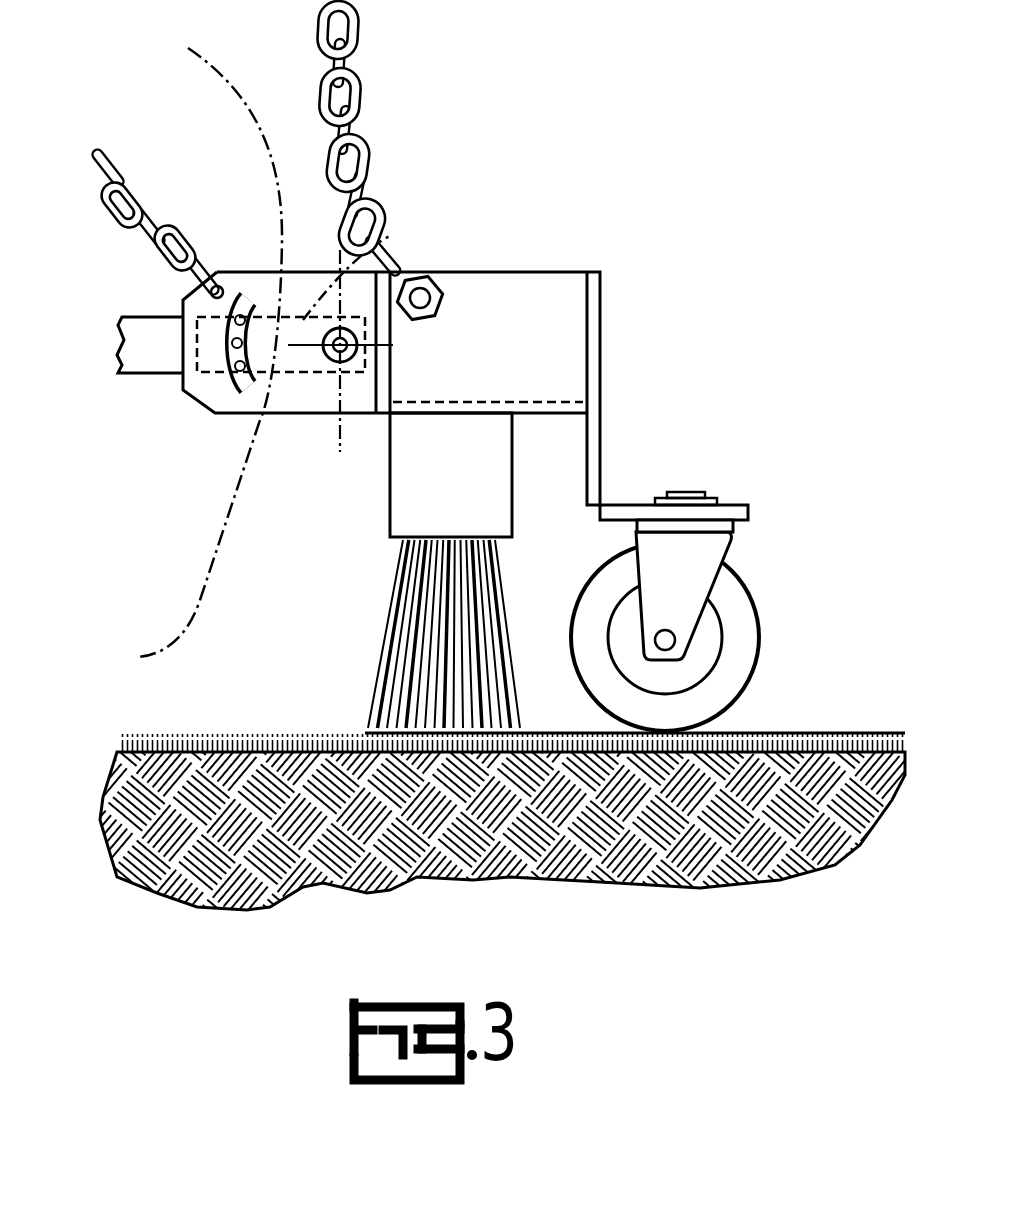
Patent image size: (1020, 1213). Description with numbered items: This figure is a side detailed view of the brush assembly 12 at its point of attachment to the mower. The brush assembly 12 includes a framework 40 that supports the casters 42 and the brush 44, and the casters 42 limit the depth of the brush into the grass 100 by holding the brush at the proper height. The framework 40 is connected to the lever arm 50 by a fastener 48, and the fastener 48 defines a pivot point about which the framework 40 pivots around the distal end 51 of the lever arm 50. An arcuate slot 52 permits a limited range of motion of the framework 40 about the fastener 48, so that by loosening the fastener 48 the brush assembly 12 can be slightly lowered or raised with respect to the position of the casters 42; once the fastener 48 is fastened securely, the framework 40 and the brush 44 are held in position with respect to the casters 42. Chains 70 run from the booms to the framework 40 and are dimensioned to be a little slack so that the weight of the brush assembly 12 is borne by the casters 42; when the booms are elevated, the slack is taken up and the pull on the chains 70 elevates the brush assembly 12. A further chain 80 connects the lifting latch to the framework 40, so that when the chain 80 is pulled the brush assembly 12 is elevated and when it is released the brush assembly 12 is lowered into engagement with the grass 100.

The brush assembly 12 is at (700, 257).
The framework 40 is at (603, 317).
The casters 42 is at (757, 607).
The brush 44 is at (392, 620).
The fastener 48 is at (333, 358).
The lever arm 50 is at (160, 335).
The distal end 51 is at (403, 232).
The arcuate slot 52 is at (236, 378).
The chains 70 is at (365, 178).
The chain 80 is at (103, 217).
The grass 100 is at (505, 805).